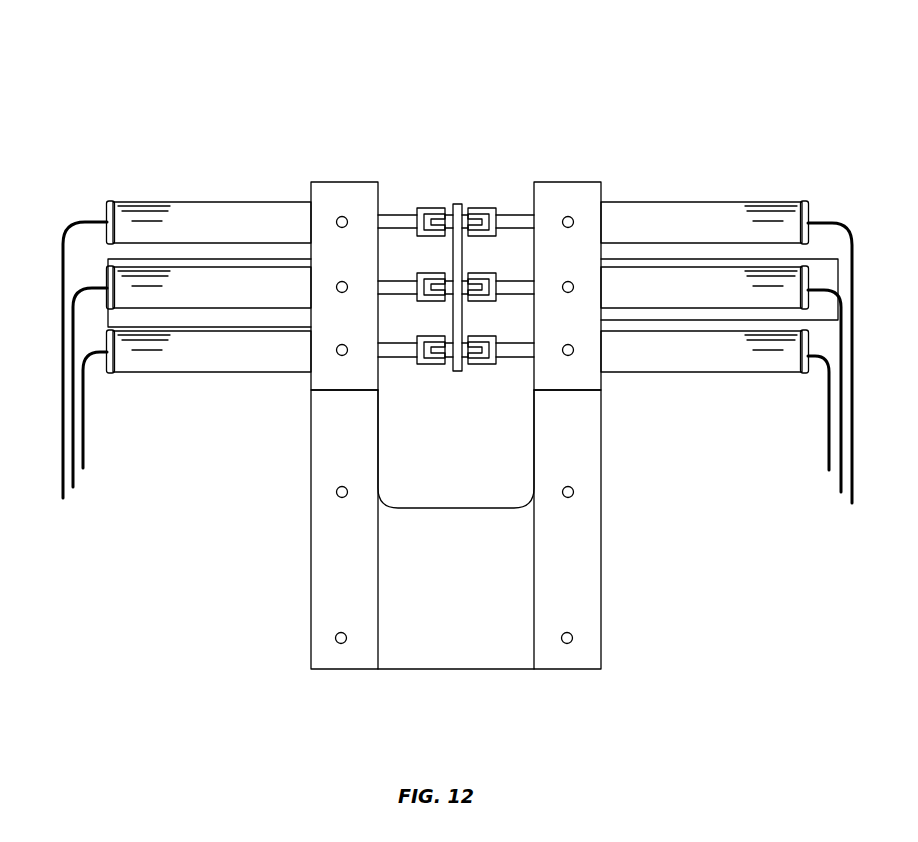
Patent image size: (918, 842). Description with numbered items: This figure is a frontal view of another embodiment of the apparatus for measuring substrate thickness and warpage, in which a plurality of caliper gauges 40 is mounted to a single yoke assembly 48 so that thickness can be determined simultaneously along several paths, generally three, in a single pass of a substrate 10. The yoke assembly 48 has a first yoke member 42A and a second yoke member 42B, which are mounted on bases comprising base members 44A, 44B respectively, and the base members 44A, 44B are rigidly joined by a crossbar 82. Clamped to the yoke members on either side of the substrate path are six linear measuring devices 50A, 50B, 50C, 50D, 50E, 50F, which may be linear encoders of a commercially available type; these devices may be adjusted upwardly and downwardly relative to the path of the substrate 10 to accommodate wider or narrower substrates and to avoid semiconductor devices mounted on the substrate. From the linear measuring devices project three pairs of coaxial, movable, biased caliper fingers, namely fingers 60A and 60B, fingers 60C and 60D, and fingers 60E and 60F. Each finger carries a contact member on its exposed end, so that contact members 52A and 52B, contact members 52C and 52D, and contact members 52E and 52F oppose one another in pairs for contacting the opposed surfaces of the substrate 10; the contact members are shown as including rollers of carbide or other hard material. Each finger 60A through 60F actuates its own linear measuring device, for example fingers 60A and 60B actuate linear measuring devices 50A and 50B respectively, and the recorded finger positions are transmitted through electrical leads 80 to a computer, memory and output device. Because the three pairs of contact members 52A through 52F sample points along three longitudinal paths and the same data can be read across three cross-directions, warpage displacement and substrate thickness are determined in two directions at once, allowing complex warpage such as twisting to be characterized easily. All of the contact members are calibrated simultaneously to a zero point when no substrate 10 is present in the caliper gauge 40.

The substrate 10 is at (457, 204).
The caliper gauge 40 is at (225, 97).
The first yoke member 42A is at (325, 207).
The second yoke member 42B is at (577, 203).
The base member 44A is at (343, 573).
The base member 44B is at (572, 573).
The yoke assembly 48 is at (727, 538).
The linear measuring device 50A is at (147, 215).
The linear measuring device 50B is at (652, 220).
The linear measuring device 50C is at (205, 282).
The linear measuring device 50D is at (702, 290).
The linear measuring device 50E is at (190, 352).
The linear measuring device 50F is at (730, 352).
The contact member 52A is at (428, 207).
The contact member 52B is at (485, 207).
The contact member 52C is at (417, 303).
The contact member 52D is at (497, 303).
The contact member 52E is at (430, 364).
The contact member 52F is at (480, 364).
The finger 60A is at (402, 216).
The finger 60B is at (522, 215).
The finger 60C is at (402, 287).
The finger 60D is at (518, 288).
The finger 60E is at (398, 360).
The finger 60F is at (515, 360).
The electrical leads 80 is at (63, 495).
The crossbar 82 is at (456, 591).